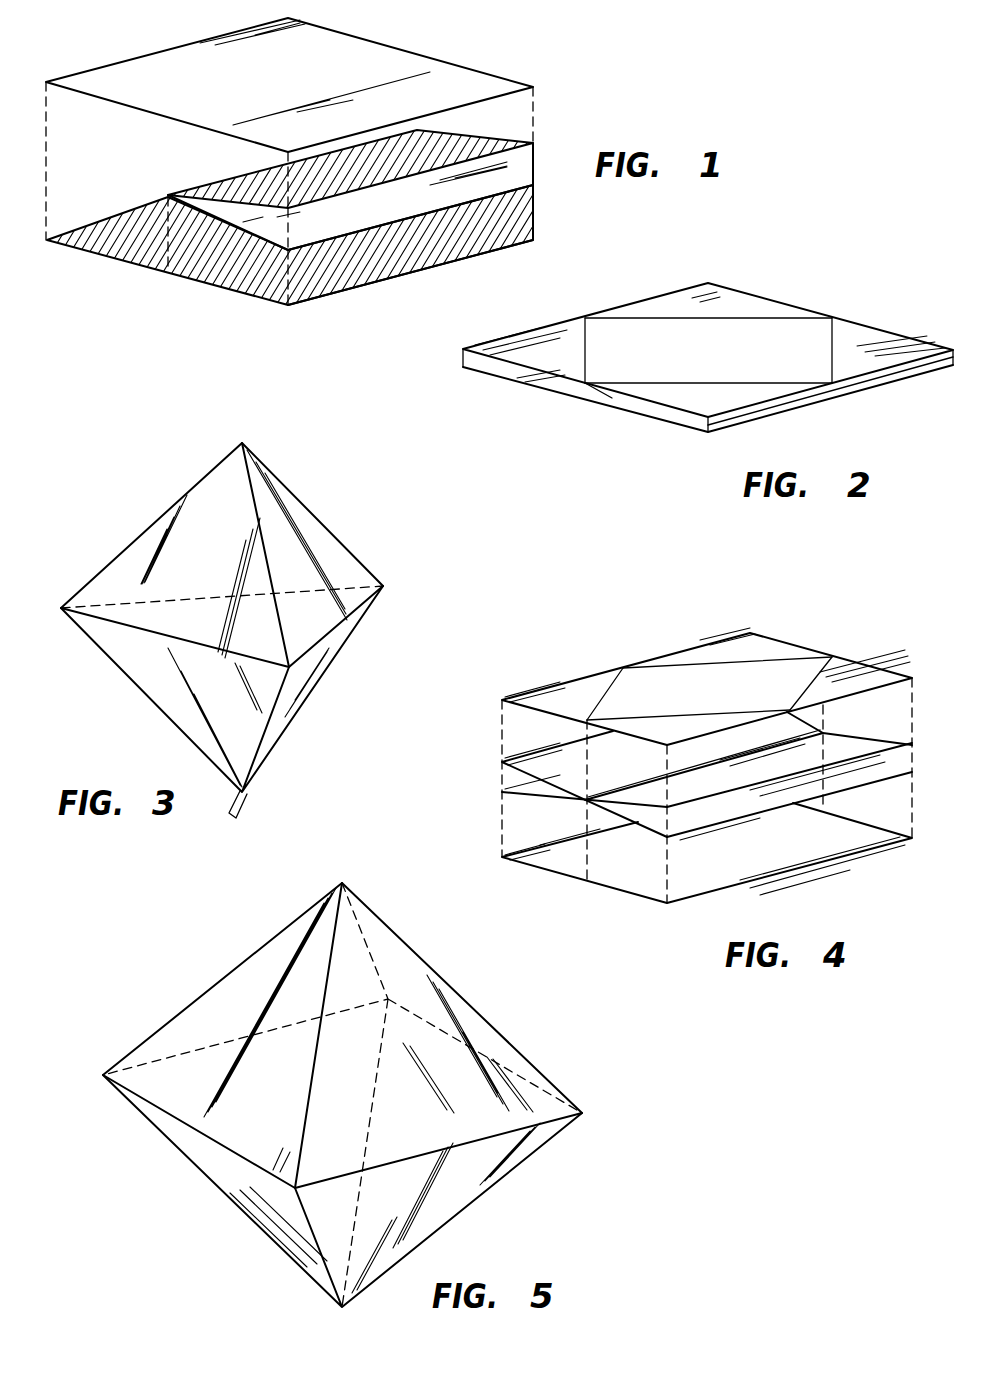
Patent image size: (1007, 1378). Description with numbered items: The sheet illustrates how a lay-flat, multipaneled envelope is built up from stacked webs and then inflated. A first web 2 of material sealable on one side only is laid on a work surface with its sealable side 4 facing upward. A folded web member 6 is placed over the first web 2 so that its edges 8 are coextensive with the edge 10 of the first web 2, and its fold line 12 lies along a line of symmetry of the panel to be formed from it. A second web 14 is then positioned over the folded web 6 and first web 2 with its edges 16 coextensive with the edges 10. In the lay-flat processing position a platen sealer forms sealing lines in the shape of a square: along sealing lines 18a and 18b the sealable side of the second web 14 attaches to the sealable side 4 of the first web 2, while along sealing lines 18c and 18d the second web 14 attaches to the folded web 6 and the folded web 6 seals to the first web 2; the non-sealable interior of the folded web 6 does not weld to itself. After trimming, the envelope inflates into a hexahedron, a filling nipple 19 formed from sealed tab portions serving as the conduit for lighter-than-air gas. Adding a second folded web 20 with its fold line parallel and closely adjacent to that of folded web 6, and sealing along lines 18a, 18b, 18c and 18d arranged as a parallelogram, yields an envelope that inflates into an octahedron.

In FIG. 1, the first web 2 is at (90, 257).
In FIG. 2, the first web 2 is at (510, 382).
In FIG. 4, the first web 2 is at (667, 905).
In FIG. 1, the sealable side 4 is at (217, 263).
In FIG. 1, the folded web member 6 is at (507, 138).
In FIG. 2, the folded web member 6 is at (600, 389).
In FIG. 4, the folded web member 6 is at (667, 838).
In FIG. 1, the edges of folded web member 8 is at (371, 223).
In FIG. 1, the edge of first web 10 is at (440, 267).
In FIG. 1, the fold line 12 is at (213, 180).
In FIG. 1, the second web 14 is at (373, 72).
In FIG. 2, the second web 14 is at (752, 293).
In FIG. 4, the second web 14 is at (767, 633).
In FIG. 1, the edges of second web 16 is at (507, 97).
In FIG. 2, the sealing line 18a is at (587, 359).
In FIG. 4, the sealing line 18a is at (603, 700).
In FIG. 2, the sealing line 18b is at (698, 318).
In FIG. 4, the sealing line 18b is at (708, 662).
In FIG. 2, the sealing line 18c is at (723, 383).
In FIG. 4, the sealing line 18c is at (738, 710).
In FIG. 2, the sealing line 18d is at (832, 346).
In FIG. 4, the sealing line 18d is at (811, 683).
In FIG. 3, the filling nipple 19 is at (234, 814).
In FIG. 4, the second folded web 20 is at (530, 790).